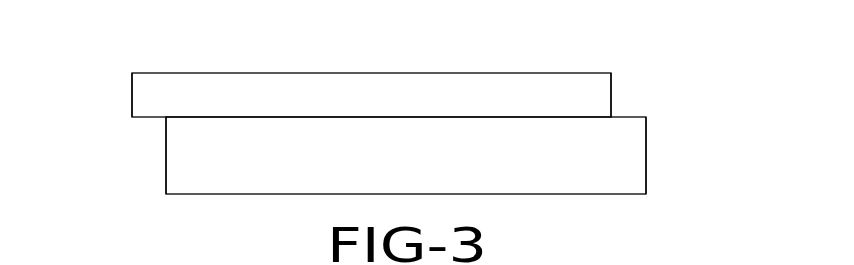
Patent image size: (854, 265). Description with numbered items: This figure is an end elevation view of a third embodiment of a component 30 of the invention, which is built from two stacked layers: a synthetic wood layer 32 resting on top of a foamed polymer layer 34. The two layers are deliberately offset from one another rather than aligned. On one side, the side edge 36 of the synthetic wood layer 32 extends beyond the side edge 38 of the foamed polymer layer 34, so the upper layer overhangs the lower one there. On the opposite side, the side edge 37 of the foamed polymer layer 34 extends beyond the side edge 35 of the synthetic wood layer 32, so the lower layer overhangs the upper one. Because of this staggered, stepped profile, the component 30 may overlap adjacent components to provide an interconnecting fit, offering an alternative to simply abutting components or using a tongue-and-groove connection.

The component 30 is at (393, 72).
The synthetic wood layer 32 is at (470, 72).
The foamed polymer layer 34 is at (587, 194).
The side edge 35 is at (611, 95).
The side edge 36 is at (132, 97).
The side edge 37 is at (646, 152).
The side edge 38 is at (166, 150).